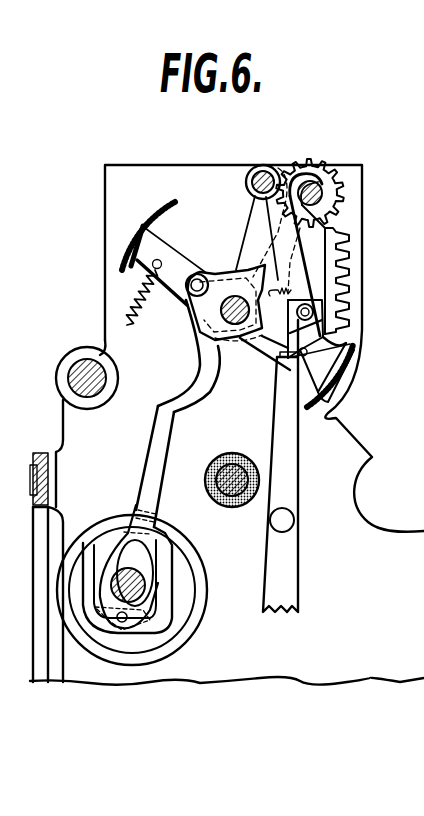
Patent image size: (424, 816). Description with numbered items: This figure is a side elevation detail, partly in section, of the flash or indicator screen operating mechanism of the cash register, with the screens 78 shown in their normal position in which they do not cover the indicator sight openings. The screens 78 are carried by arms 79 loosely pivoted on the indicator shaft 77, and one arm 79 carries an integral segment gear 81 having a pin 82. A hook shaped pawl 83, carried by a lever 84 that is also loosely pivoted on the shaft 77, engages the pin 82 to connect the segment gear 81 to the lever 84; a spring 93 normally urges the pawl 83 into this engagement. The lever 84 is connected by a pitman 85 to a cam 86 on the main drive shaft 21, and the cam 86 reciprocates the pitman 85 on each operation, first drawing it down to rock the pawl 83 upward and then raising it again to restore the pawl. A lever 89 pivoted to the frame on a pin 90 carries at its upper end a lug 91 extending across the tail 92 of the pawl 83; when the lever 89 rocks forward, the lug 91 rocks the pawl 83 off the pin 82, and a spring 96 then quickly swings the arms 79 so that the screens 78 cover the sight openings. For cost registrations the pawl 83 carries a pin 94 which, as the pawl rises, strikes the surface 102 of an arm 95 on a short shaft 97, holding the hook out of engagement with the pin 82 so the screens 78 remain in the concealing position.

The main drive shaft 21 is at (113, 577).
The indicator shaft 77 is at (222, 311).
The screens 78 is at (150, 228).
The arms 79 is at (180, 262).
The segment gear 81 is at (263, 230).
The pin 82 is at (326, 292).
The hook shaped pawl 83 is at (324, 337).
The lever 84 is at (235, 348).
The pitman 85 is at (166, 428).
The cam 86 is at (193, 547).
The lever 89 is at (292, 573).
The pin 90 is at (294, 520).
The lug 91 is at (272, 380).
The tail 92 is at (350, 370).
The spring 93 is at (314, 266).
The pin 94 is at (346, 348).
The arm 95 is at (293, 244).
The spring 96 is at (136, 326).
The short shaft 97 is at (270, 168).
The surface 102 is at (238, 334).